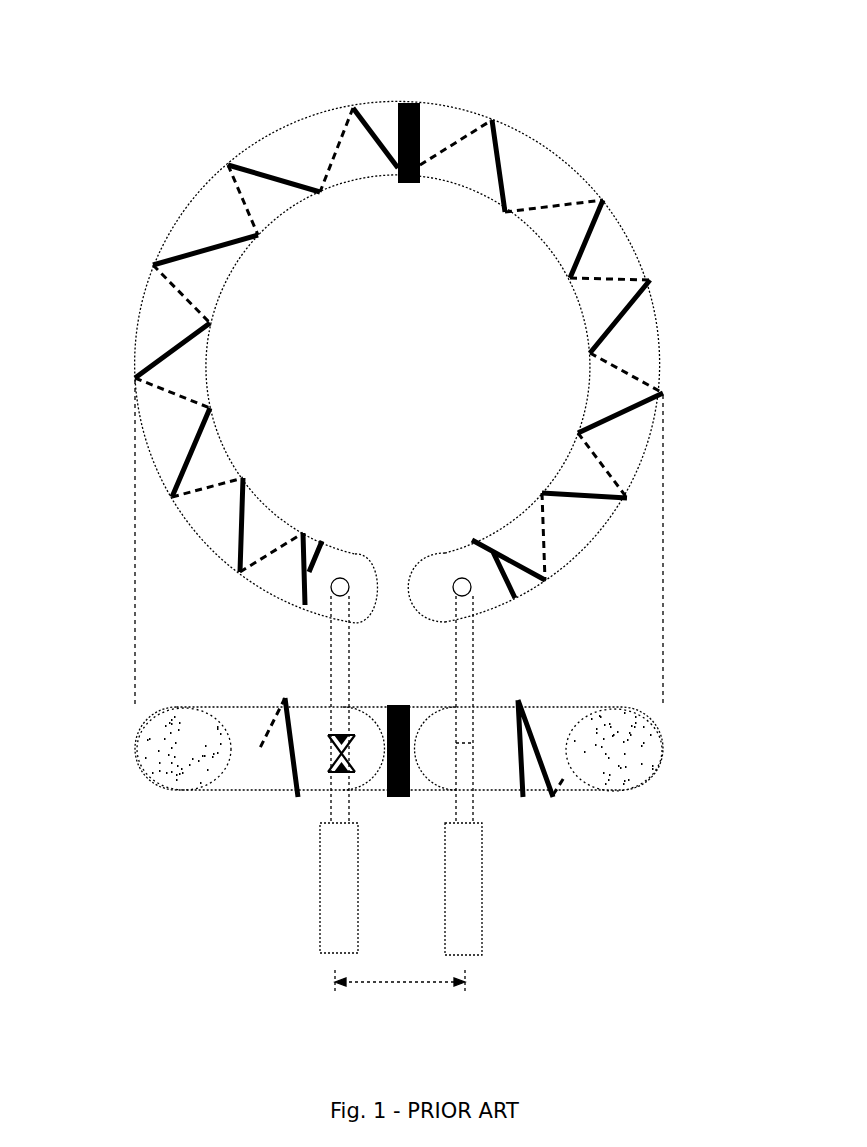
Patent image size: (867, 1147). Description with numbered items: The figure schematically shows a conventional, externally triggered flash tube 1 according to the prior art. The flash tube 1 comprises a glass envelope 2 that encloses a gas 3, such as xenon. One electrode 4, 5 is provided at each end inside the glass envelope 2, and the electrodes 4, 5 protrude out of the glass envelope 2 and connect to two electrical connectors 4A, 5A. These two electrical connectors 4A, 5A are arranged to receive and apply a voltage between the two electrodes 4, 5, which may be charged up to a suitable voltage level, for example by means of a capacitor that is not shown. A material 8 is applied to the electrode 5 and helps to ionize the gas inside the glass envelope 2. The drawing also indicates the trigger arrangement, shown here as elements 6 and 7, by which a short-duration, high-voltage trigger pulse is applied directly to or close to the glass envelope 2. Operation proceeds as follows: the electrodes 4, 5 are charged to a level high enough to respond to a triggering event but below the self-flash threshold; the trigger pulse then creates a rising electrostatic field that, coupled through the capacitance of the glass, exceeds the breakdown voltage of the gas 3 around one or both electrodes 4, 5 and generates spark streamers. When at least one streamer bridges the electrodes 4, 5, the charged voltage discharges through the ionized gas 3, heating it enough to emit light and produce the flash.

The flash tube 1 is at (152, 124).
The glass envelope 2 is at (640, 223).
The gas 3 is at (150, 747).
The electrode 4 is at (462, 556).
The electrode 5 is at (338, 556).
The dipole elements 6 is at (565, 178).
The pulse electrode 7 is at (408, 88).
The material 8 is at (352, 738).
The electrical connector 4A is at (490, 893).
The electrical connector 5A is at (312, 893).